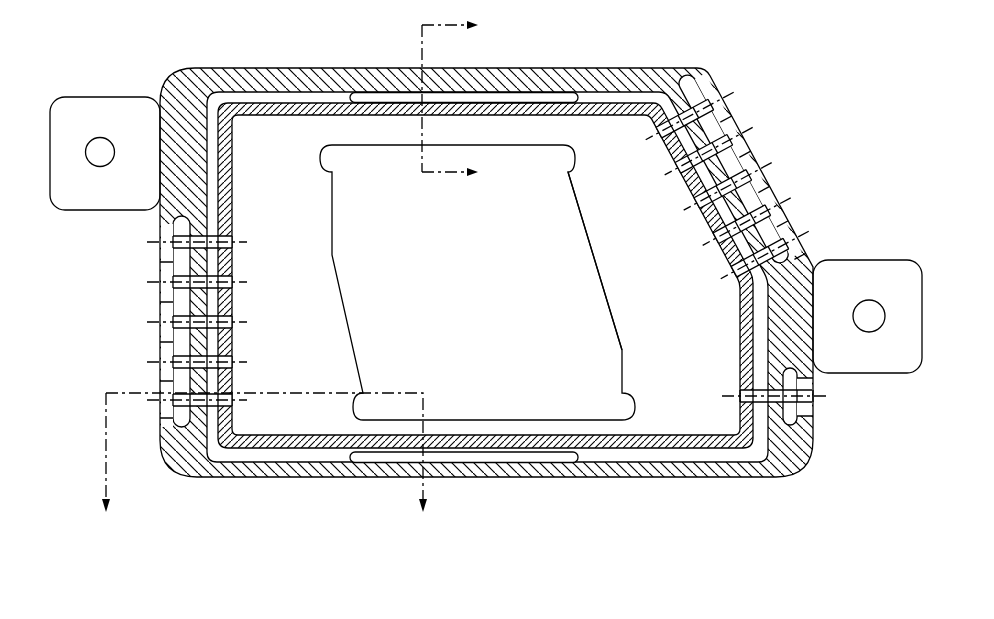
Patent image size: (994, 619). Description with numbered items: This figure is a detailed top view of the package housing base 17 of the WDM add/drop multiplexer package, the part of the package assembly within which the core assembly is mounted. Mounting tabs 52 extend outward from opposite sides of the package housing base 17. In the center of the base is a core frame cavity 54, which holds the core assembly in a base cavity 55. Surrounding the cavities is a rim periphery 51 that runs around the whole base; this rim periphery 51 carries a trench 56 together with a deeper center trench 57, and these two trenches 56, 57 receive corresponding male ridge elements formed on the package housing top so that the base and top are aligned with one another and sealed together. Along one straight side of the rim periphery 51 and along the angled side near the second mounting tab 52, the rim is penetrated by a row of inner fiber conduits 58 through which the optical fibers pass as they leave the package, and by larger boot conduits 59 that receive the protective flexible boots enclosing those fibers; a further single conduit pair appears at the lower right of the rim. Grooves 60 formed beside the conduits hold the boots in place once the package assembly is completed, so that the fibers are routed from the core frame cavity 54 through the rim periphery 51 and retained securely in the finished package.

The package housing base 17 is at (205, 42).
The rim periphery 51 is at (300, 80).
The mounting tabs 52 is at (102, 107).
The core frame cavity 54 is at (508, 337).
The base cavity 55 is at (611, 290).
The trench 56 is at (600, 97).
The center trench 57 is at (372, 97).
The inner fiber conduits 58 is at (228, 246).
The boot conduits 59 is at (163, 290).
The grooves 60 is at (177, 222).